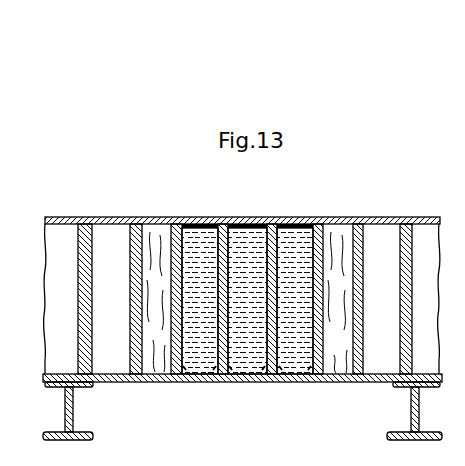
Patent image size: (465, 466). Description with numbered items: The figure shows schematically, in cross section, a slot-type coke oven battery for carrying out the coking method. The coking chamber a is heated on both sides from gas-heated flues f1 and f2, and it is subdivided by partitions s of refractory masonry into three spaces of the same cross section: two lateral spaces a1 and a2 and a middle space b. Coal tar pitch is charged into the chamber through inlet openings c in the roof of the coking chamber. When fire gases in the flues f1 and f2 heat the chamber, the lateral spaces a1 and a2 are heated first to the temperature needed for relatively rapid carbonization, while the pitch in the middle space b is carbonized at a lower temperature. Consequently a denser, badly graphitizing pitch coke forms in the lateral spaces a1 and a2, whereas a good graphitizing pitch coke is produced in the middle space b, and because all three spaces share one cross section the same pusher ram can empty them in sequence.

The lateral space a1 is at (188, 242).
The lateral space a2 is at (297, 246).
The coking chamber a is at (313, 388).
The middle space b is at (235, 233).
The inlet opening c is at (203, 222).
The partition s is at (183, 365).
The gas-heated flue f1 is at (155, 302).
The gas-heated flue f2 is at (337, 302).